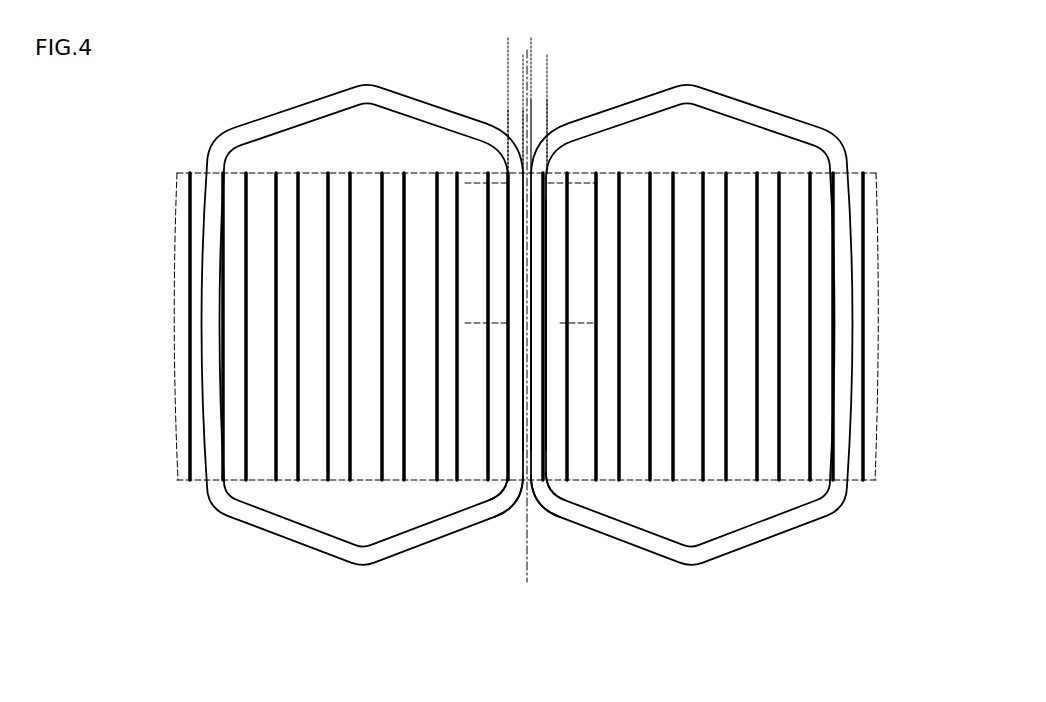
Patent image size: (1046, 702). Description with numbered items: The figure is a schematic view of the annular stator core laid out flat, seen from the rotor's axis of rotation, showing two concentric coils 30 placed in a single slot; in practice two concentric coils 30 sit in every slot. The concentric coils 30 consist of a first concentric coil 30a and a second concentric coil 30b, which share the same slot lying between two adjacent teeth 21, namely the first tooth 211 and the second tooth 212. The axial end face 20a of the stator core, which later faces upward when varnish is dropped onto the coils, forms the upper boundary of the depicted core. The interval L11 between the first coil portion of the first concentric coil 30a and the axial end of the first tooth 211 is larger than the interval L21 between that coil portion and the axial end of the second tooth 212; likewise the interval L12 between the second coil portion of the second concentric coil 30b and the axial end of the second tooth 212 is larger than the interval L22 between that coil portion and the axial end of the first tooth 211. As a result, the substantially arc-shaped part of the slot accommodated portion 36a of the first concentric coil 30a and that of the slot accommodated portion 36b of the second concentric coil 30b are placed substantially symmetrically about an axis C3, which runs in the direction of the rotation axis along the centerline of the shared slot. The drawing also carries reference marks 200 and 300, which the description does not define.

The concentric coils 30 is at (544, 299).
The first concentric coil 30a is at (787, 123).
The second concentric coil 30b is at (387, 92).
The axial end face 20a is at (690, 172).
The slot accommodated portion of the first concentric coil 36a is at (518, 302).
The slot accommodated portion of the second concentric coil 36b is at (537, 305).
The bent portion 21 is at (522, 530).
The first tooth 211 is at (494, 475).
The second tooth 212 is at (555, 473).
The distance from surface 200 is at (472, 183).
The distance between straight portions 300 is at (472, 323).
The interval L11 is at (543, 43).
The interval L12 is at (512, 60).
The interval L21 is at (522, 107).
The interval L22 is at (532, 118).
The axis C3 is at (528, 588).